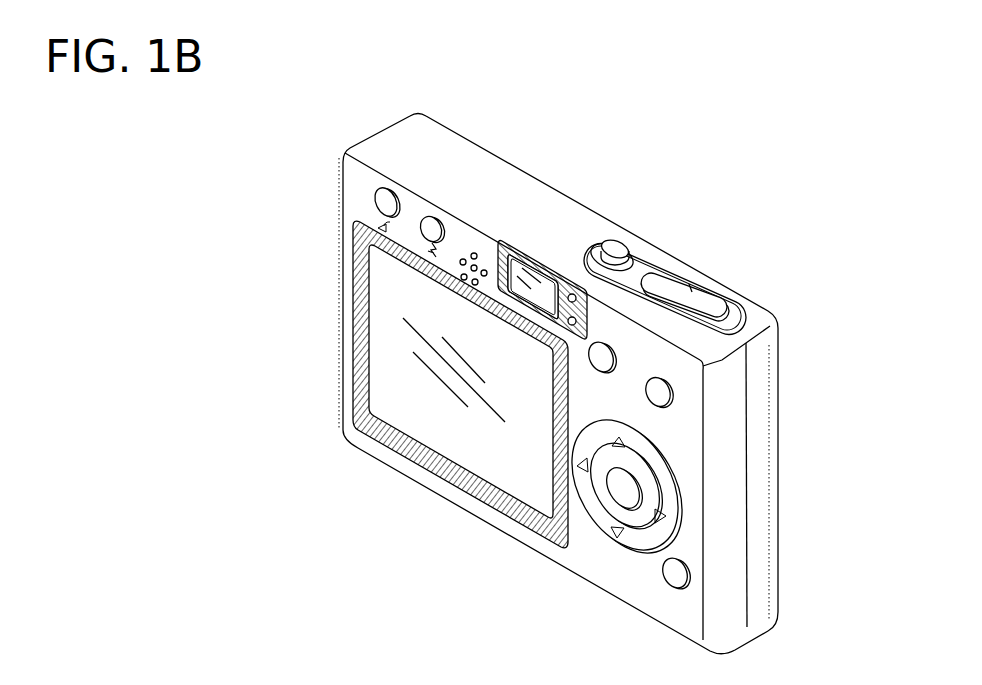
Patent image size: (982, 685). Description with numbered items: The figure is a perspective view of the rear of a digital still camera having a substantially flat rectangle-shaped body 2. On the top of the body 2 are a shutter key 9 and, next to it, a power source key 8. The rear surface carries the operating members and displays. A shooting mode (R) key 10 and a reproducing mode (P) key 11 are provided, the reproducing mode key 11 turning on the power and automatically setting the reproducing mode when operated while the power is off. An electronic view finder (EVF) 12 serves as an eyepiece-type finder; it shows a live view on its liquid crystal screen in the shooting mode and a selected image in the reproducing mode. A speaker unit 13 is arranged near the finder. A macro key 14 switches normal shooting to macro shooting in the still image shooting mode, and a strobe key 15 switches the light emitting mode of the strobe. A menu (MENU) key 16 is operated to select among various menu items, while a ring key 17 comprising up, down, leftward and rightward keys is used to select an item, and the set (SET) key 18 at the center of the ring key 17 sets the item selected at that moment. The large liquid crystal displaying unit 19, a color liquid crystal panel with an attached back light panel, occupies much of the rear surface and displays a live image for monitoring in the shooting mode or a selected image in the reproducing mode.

The rectangle-shaped body 2 is at (778, 418).
The power source key 8 is at (617, 245).
The shutter key 9 is at (693, 277).
The shooting mode (R) key 10 is at (670, 395).
The reproducing mode (P) key 11 is at (608, 362).
The electronic view finder (EVF) 12 is at (545, 275).
The speaker unit 13 is at (483, 257).
The macro key 14 is at (440, 232).
The strobe key 15 is at (397, 210).
The menu (MENU) key 16 is at (685, 574).
The ring key 17 is at (637, 452).
The set (SET) key 18 is at (643, 488).
The liquid crystal displaying unit 19 is at (418, 427).